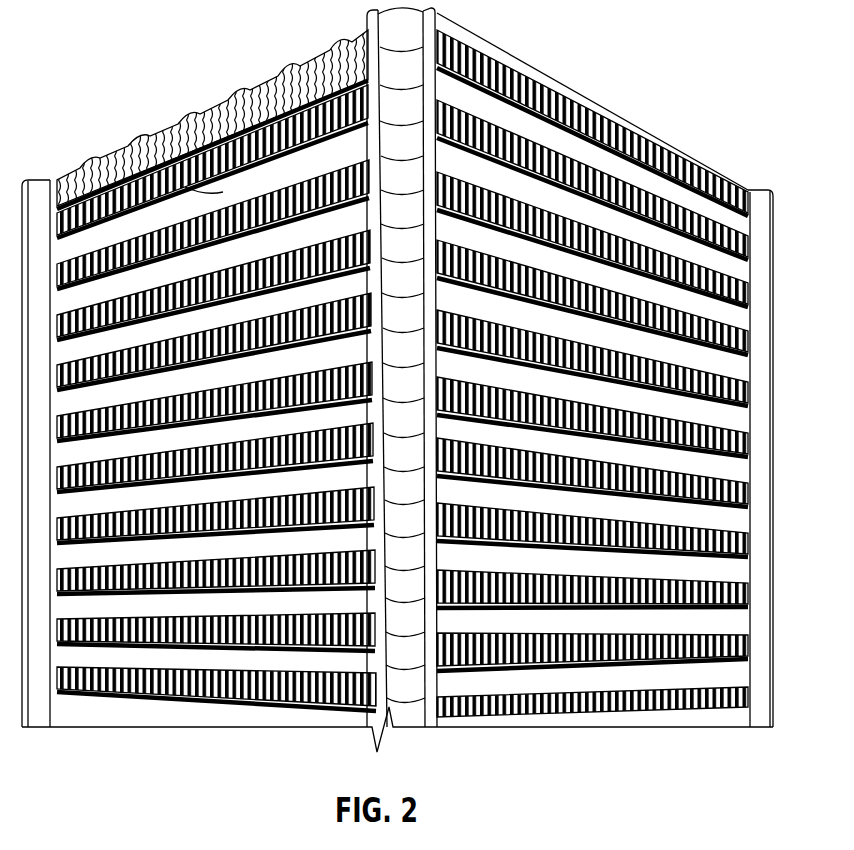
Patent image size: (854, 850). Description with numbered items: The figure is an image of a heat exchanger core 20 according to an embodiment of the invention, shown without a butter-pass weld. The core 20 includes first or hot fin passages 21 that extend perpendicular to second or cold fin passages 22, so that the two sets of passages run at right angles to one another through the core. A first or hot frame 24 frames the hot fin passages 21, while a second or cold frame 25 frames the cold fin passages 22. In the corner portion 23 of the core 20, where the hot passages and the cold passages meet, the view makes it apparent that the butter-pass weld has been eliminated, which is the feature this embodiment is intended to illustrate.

The heat exchanger core 20 is at (678, 53).
The hot fin passages 21 is at (488, 53).
The cold fin passages 22 is at (230, 97).
The corner portion 23 is at (415, 275).
The hot frame 24 is at (140, 140).
The cold frame 25 is at (560, 143).